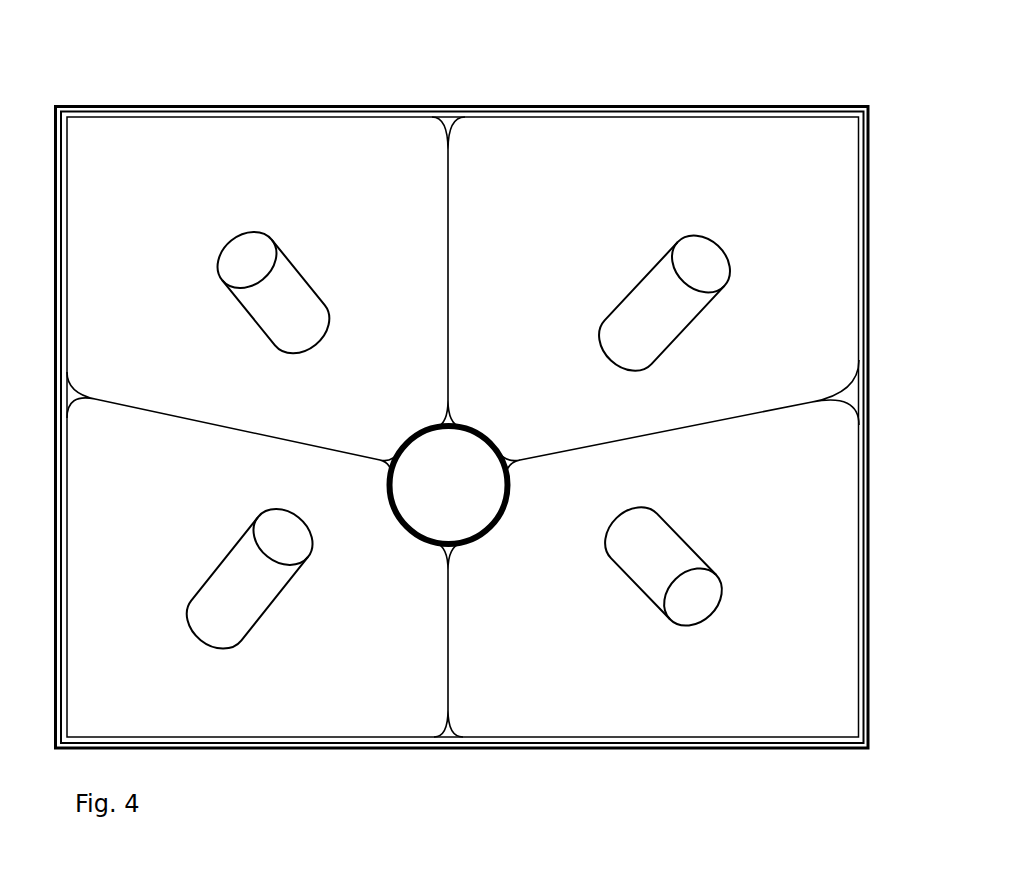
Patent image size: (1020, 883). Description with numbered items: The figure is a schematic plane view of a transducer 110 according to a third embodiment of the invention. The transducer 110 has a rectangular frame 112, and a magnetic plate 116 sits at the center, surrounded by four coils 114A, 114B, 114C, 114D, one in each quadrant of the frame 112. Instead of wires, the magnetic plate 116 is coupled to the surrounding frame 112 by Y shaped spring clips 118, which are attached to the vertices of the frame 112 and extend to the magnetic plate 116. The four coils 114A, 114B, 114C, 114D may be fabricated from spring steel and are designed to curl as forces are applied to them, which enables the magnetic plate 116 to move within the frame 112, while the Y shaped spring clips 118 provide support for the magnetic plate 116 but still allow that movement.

The transducer 110 is at (672, 100).
The frame 112 is at (303, 110).
The coil 114A is at (291, 277).
The coil 114B is at (642, 275).
The coil 114C is at (688, 548).
The coil 114D is at (216, 566).
The magnetic plate 116 is at (472, 443).
The Y shaped spring clips 118 is at (450, 661).